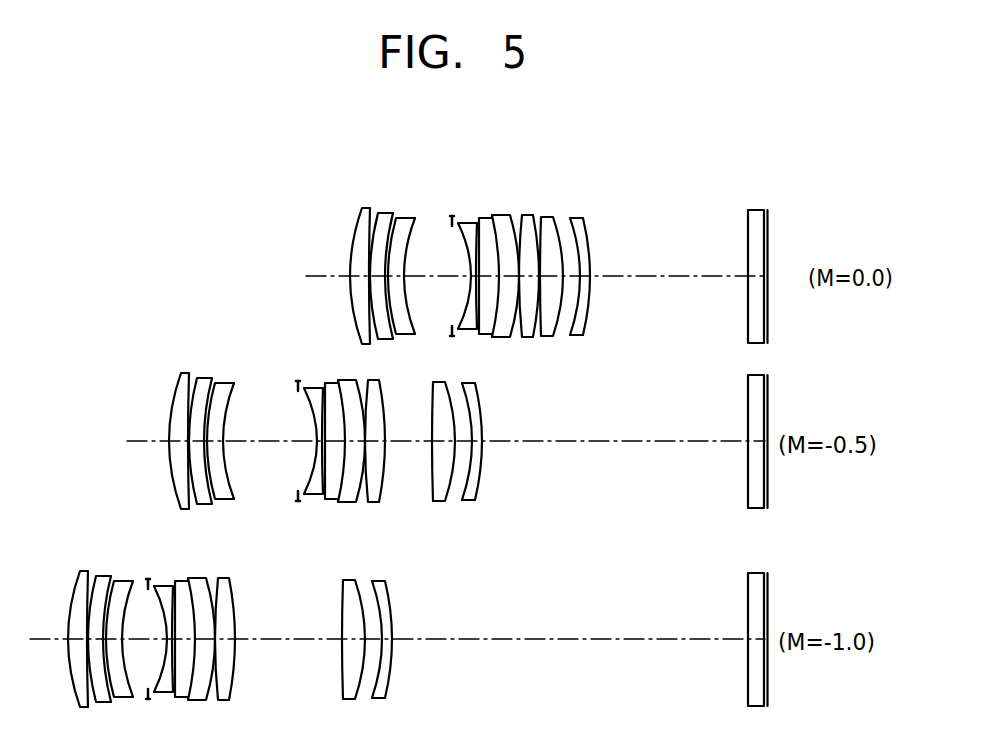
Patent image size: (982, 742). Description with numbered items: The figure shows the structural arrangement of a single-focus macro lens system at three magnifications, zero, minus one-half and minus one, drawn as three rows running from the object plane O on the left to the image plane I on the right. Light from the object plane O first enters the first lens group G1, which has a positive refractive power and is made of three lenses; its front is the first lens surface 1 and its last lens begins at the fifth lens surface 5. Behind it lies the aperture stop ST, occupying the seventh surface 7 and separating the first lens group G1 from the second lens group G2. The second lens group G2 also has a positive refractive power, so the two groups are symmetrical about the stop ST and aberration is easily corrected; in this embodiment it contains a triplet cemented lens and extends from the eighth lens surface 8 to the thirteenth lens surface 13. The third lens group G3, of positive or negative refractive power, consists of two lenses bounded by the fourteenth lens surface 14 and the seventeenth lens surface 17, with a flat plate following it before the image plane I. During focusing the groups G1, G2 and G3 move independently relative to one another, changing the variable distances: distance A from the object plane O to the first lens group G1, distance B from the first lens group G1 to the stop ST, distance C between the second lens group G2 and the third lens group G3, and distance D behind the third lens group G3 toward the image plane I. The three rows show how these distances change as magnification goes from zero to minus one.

The first lens surface 1 is at (357, 222).
The fifth lens surface 5 is at (413, 224).
The aperture stop surface 7 is at (450, 217).
The eighth lens surface 8 is at (459, 224).
The thirteenth lens surface 13 is at (533, 216).
The fourteenth lens surface 14 is at (542, 218).
The seventeenth lens surface 17 is at (586, 232).
The first lens group G1 is at (417, 148).
The second lens group G2 is at (533, 148).
The third lens group G3 is at (588, 148).
The aperture stop ST is at (449, 335).
The object plane O is at (283, 277).
The image plane I is at (771, 276).
The variable distance A is at (146, 446).
The variable distance B is at (262, 446).
The variable distance C is at (407, 446).
The variable distance D is at (541, 446).